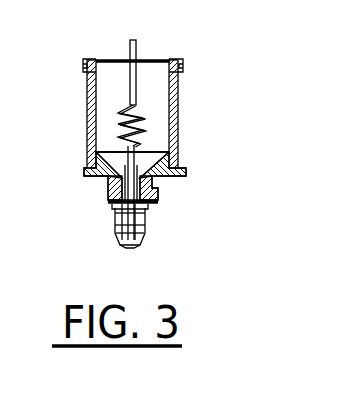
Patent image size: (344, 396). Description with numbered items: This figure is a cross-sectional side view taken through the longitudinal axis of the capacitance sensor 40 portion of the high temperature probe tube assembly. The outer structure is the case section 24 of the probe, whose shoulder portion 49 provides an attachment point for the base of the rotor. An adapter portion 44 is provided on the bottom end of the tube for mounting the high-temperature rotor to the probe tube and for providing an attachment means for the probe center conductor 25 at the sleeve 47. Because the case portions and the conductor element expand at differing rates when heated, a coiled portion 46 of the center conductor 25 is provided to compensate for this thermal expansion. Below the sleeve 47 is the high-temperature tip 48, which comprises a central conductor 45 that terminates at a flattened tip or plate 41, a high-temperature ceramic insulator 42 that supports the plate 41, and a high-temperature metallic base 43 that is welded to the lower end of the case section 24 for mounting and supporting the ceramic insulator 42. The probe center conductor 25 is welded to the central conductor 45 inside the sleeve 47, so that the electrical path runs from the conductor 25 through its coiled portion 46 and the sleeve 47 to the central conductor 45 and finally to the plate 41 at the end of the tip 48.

The capacitance sensor 40 is at (157, 48).
The shoulder portion 49 is at (83, 62).
The case section 24 is at (87, 118).
The center conductor 25 is at (136, 89).
The coiled portion 46 is at (143, 120).
The adapter portion 44 is at (155, 137).
The sleeve 47 is at (88, 183).
The high-temperature tip 48 is at (102, 206).
The central conductor 45 is at (117, 223).
The high-temperature metallic base 43 is at (146, 218).
The high-temperature ceramic insulator 42 is at (148, 237).
The flattened tip or plate 41 is at (134, 247).